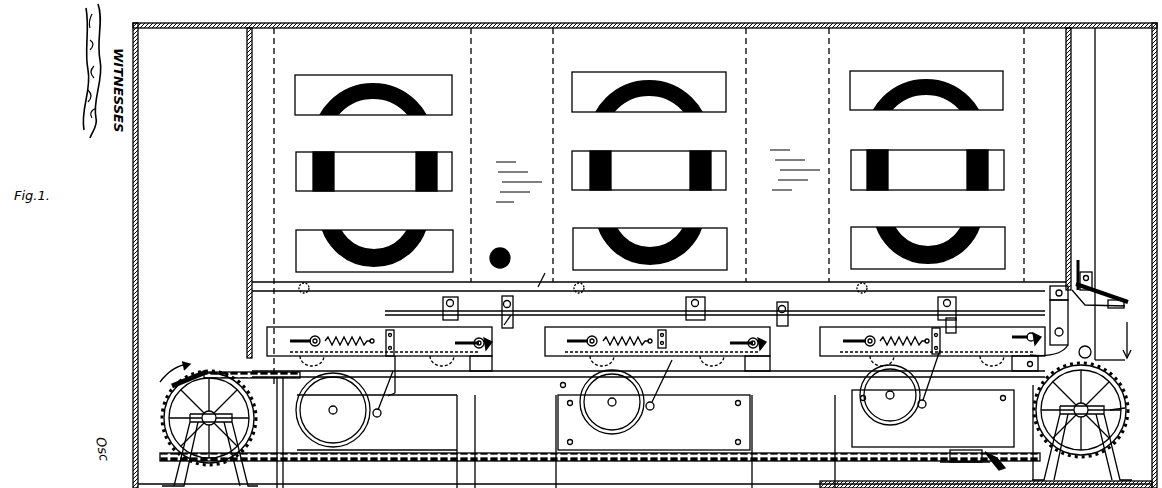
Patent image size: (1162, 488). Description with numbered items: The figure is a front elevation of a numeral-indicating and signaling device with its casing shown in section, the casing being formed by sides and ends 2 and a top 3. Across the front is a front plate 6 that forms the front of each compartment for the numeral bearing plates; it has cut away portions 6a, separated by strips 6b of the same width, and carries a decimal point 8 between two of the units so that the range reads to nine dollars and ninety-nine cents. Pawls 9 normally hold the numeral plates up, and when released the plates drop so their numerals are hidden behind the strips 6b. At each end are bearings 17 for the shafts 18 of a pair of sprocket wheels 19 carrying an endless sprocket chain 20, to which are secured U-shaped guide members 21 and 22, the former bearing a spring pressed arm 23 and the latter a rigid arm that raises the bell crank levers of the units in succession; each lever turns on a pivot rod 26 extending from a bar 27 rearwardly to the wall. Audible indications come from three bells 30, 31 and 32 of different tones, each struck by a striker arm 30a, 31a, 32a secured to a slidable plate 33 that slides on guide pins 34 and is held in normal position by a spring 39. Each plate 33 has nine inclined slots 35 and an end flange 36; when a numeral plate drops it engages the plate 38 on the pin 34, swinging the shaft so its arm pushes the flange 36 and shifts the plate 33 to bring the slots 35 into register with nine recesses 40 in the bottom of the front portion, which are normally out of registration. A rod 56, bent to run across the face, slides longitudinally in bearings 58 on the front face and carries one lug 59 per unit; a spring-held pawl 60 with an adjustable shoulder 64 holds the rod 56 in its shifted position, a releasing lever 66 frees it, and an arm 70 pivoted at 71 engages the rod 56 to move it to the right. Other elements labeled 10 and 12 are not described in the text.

The sides and ends 2 is at (631, 255).
The top 3 is at (674, 24).
The front plate 6 is at (650, 150).
The cut away portions 6a is at (415, 74).
The strips 6b is at (650, 198).
The decimal point 8 is at (505, 255).
The pawls 9 is at (1090, 323).
The lever 10 is at (1098, 298).
The handle 12 is at (1119, 367).
The bearings 17 is at (650, 446).
The shafts 18 is at (654, 414).
The sprocket wheels 19 is at (678, 385).
The endless sprocket chain 20 is at (600, 432).
The U-shaped guide member 21 is at (965, 464).
The U-shaped guide member 22 is at (184, 367).
The spring pressed arm 23 is at (1007, 463).
The pivot rod 26 is at (586, 297).
The bar 27 is at (534, 275).
The bell 30 is at (346, 410).
The striker arm 30a is at (398, 394).
The bell 31 is at (612, 402).
The striker arm 31a is at (675, 385).
The bell 32 is at (890, 395).
The striker arm 32a is at (945, 379).
The slidable plate 33 is at (657, 327).
The guide pin 34 is at (672, 331).
The inclined slots 35 is at (662, 362).
The flange 36 is at (762, 348).
The plate 38 is at (754, 365).
The spring 39 is at (627, 329).
The recesses 40 is at (656, 361).
The rod 56 is at (772, 298).
The bearings 58 is at (715, 305).
The lugs 59 is at (729, 312).
The pawl 60 is at (1107, 291).
The adjustable shoulder 64 is at (1129, 307).
The releasing lever 66 is at (1075, 347).
The arm 70 is at (1102, 279).
The pivot 71 is at (1099, 270).